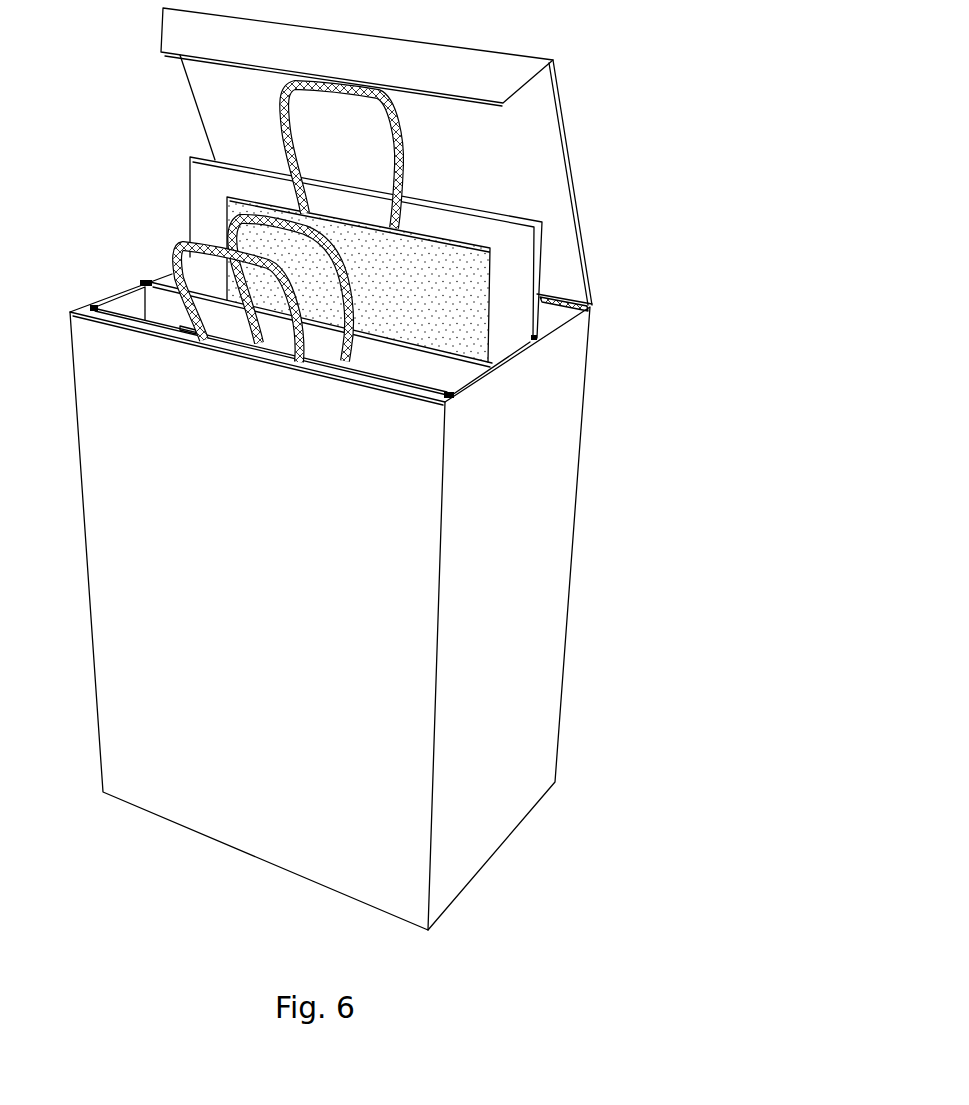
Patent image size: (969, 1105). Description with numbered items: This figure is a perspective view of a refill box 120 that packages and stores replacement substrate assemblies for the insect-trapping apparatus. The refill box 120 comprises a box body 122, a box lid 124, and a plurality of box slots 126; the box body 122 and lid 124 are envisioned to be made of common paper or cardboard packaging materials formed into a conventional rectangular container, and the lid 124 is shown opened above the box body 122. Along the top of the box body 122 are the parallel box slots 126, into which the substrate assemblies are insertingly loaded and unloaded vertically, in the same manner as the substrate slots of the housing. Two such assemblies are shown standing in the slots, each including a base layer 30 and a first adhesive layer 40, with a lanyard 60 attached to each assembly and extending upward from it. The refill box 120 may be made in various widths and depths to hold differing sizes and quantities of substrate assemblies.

The refill box 120 is at (352, 468).
The box body 122 is at (495, 815).
The box lid 124 is at (547, 135).
The box slots 126 is at (143, 283).
The base layer 30 is at (526, 237).
The first adhesive layer 40 is at (457, 284).
The lanyard 60 is at (171, 243).